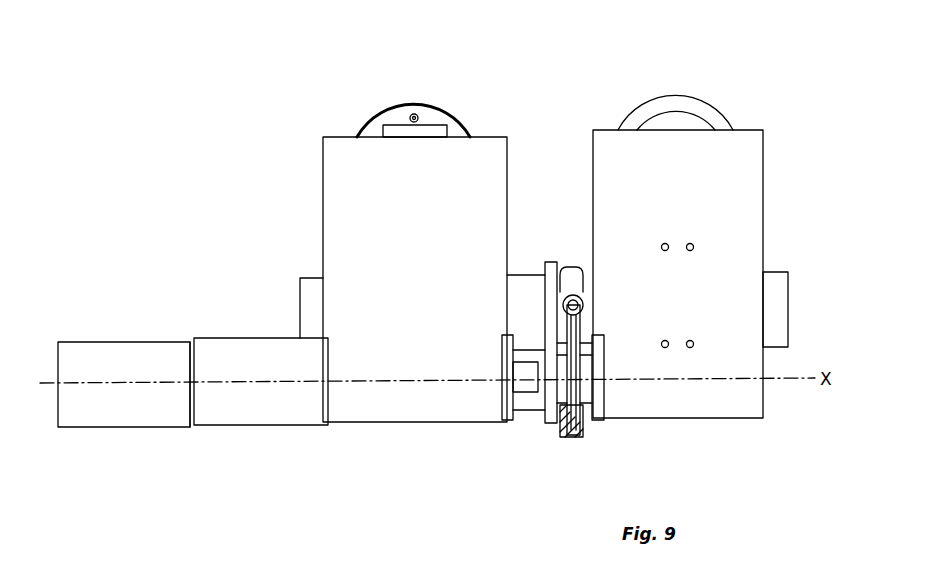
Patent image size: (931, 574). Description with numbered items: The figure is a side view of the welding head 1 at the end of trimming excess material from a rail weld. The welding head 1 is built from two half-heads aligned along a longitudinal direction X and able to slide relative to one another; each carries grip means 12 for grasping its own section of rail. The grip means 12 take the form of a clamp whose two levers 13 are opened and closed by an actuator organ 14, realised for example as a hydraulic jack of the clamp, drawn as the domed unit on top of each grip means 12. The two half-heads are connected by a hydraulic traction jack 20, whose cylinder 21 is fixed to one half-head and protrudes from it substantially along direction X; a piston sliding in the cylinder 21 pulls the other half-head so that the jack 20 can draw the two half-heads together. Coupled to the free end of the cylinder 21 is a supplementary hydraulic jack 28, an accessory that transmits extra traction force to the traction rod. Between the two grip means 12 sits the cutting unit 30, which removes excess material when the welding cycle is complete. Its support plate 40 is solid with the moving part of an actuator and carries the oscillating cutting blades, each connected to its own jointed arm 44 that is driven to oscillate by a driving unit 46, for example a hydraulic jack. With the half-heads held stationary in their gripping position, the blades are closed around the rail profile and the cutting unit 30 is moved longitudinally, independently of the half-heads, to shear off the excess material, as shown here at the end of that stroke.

The welding head 1 is at (553, 96).
The grip means 12 is at (417, 410).
The levers 13 is at (322, 157).
The actuator organ 14 is at (398, 100).
The hydraulic traction jack 20 is at (239, 326).
The cylinder 21 is at (253, 415).
The supplementary hydraulic jack 28 is at (118, 352).
The cutting unit 30 is at (548, 450).
The support plate 40 is at (523, 410).
The jointed arm 44 is at (607, 407).
The driving unit 46 is at (575, 265).